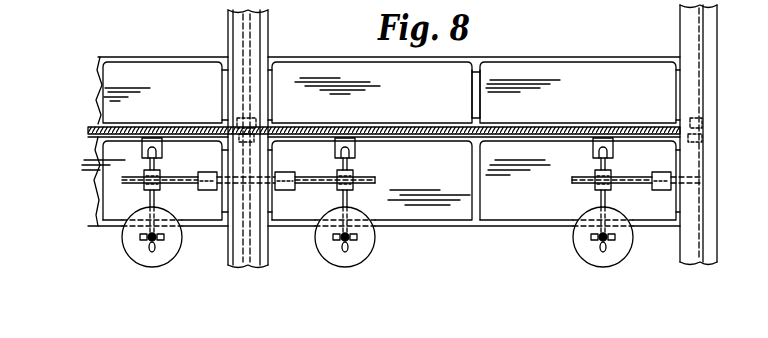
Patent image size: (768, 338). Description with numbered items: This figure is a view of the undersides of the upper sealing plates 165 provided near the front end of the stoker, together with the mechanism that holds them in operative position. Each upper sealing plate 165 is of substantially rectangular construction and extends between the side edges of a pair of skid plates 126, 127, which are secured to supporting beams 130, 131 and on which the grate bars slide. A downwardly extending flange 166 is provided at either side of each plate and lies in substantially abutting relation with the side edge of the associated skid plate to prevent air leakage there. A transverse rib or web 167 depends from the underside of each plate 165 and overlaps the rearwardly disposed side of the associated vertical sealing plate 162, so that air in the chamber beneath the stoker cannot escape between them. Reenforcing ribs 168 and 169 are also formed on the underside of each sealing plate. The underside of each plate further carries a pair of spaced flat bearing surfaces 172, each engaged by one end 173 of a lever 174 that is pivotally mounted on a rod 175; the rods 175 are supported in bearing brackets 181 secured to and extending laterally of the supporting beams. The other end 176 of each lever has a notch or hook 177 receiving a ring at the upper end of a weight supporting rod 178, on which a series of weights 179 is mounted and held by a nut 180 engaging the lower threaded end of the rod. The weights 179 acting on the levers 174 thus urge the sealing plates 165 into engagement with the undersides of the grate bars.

The skid plate 126 is at (270, 236).
The skid plate 127 is at (708, 249).
The supporting beam 130 is at (252, 258).
The supporting beam 131 is at (688, 228).
The vertical sealing plate 162 is at (168, 127).
The upper sealing plate 165 is at (100, 58).
The downwardly extending flange 166 is at (222, 88).
The transverse rib 167 is at (110, 141).
The reenforcing rib 168 is at (472, 102).
The reenforcing rib 169 is at (472, 168).
The flat bearing surface 172 is at (142, 146).
The lever end 173 is at (155, 163).
The lever 174 is at (144, 194).
The rod 175 is at (122, 181).
The lever end 176 is at (134, 218).
The notch or hook 177 is at (341, 247).
The weight supporting rod 178 is at (158, 243).
The weight 179 is at (136, 250).
The nut 180 is at (148, 238).
The bearing bracket 181 is at (204, 172).